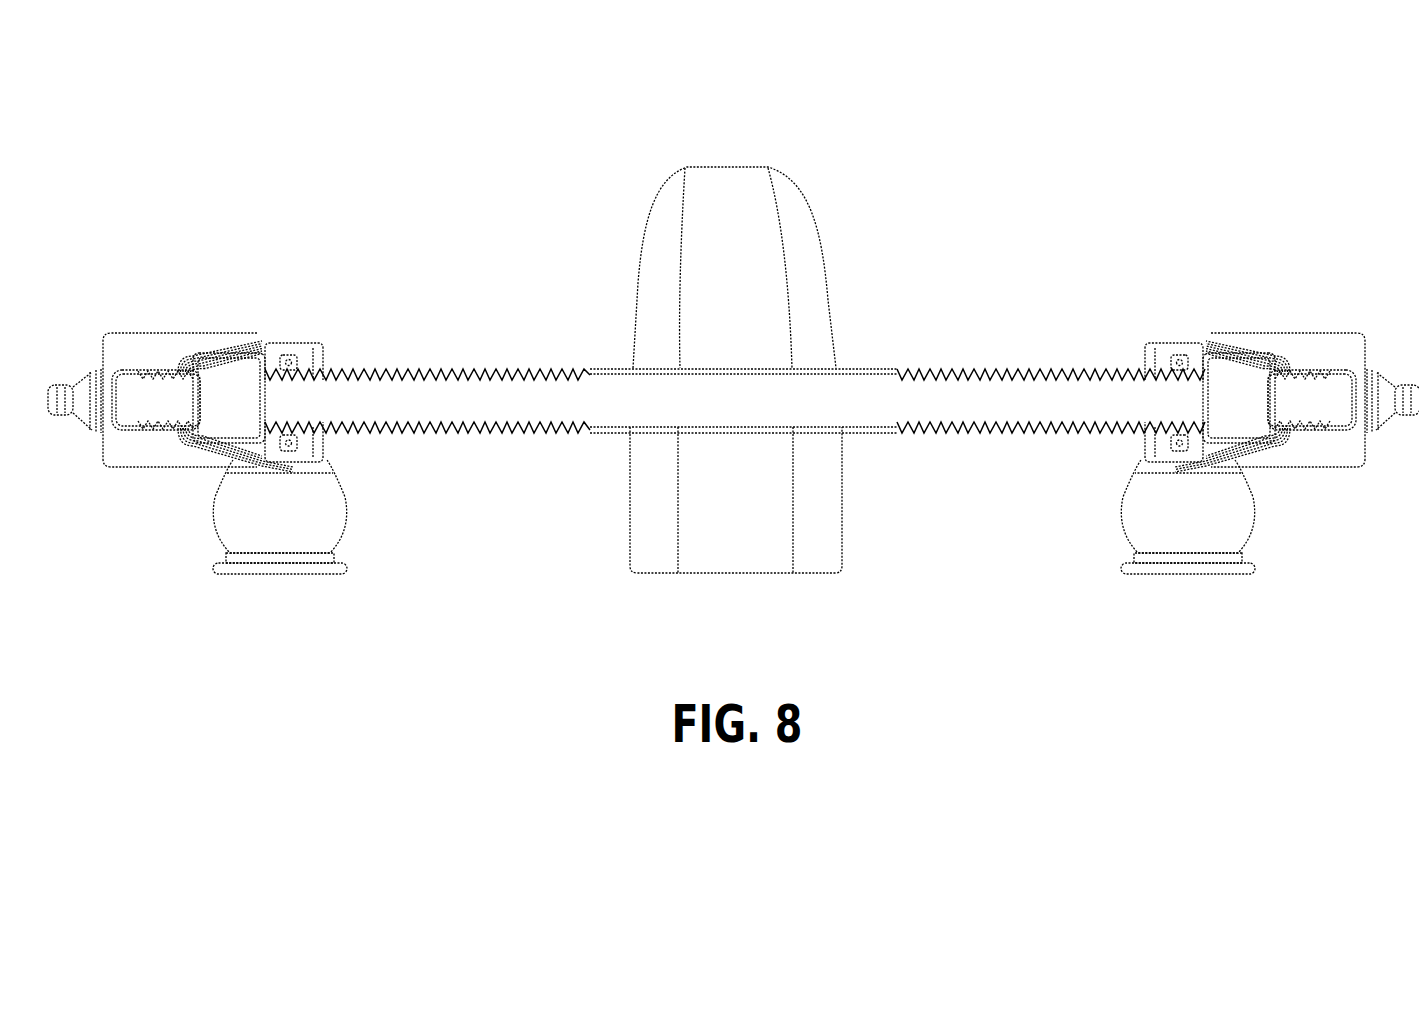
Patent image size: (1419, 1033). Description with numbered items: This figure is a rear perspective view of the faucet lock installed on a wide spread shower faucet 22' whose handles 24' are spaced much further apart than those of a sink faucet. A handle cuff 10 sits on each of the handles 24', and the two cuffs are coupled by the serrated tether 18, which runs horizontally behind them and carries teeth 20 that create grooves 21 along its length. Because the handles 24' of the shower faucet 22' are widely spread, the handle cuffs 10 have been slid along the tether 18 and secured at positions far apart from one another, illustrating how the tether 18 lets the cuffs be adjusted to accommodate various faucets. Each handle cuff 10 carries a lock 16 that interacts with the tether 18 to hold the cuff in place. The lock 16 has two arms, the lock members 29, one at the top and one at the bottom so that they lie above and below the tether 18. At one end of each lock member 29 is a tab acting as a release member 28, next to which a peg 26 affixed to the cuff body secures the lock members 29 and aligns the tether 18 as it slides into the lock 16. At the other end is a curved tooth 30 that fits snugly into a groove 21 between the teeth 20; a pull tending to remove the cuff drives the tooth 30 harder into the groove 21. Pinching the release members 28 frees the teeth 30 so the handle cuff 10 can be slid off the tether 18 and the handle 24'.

The handle cuff 10 is at (153, 322).
The lock 16 is at (211, 416).
The tether 18 is at (480, 416).
The teeth 20 is at (925, 439).
The grooves 21 is at (978, 439).
The shower faucet 22' is at (839, 352).
The handles 24' is at (733, 491).
The peg 26 is at (310, 364).
The release member 28 is at (276, 321).
The lock member 29 is at (236, 331).
The tooth 30 is at (185, 342).